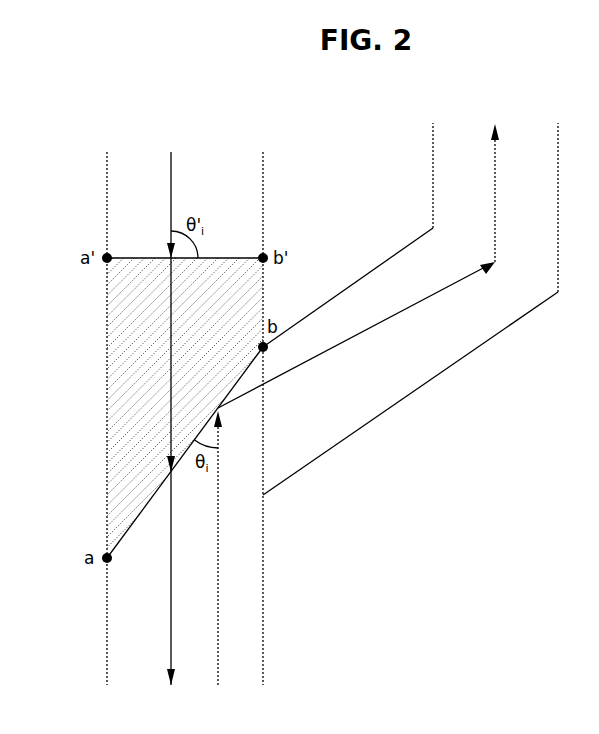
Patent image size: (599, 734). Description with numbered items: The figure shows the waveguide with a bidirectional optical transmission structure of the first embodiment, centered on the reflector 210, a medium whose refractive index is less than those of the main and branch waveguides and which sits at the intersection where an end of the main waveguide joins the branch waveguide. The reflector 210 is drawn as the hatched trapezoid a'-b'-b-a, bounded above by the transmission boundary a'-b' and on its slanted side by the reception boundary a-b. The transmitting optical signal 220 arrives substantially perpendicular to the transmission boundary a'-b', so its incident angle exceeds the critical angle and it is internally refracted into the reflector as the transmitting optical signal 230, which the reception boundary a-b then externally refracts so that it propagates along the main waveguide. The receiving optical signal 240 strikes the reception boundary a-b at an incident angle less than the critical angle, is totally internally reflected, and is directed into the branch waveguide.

The reflector 210 is at (132, 383).
The transmitting optical signal 220 is at (171, 182).
The transmitting optical signal 230 is at (171, 320).
The receiving optical signal 240 is at (218, 580).